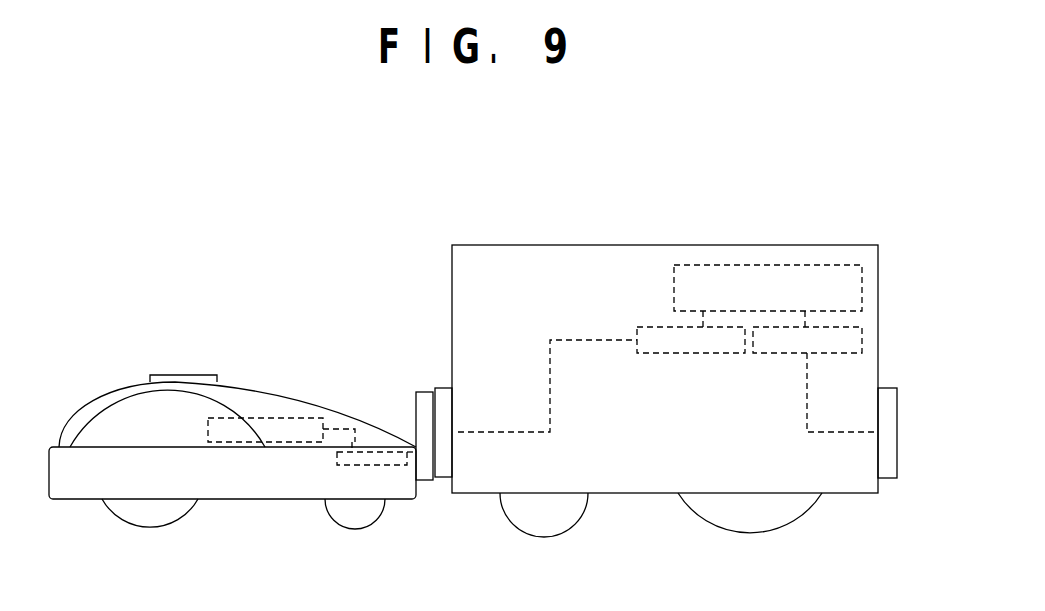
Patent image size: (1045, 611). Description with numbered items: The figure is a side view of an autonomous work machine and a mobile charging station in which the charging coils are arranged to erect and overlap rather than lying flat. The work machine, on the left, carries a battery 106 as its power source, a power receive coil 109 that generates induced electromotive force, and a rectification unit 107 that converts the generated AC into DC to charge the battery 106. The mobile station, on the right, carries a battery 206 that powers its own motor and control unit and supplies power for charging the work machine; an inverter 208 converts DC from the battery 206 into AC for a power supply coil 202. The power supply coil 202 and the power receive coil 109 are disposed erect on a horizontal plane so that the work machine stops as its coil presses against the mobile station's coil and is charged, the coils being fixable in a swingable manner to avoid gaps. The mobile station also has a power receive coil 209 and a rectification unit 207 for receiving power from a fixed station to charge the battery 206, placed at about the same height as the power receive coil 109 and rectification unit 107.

The battery 106 is at (272, 418).
The rectification unit 107 is at (365, 452).
The power receive coil 109 is at (418, 392).
The power supply coil 202 is at (452, 413).
The battery 206 is at (812, 265).
The rectification unit 207 is at (787, 360).
The inverter 208 is at (653, 327).
The power receive coil 209 is at (885, 388).